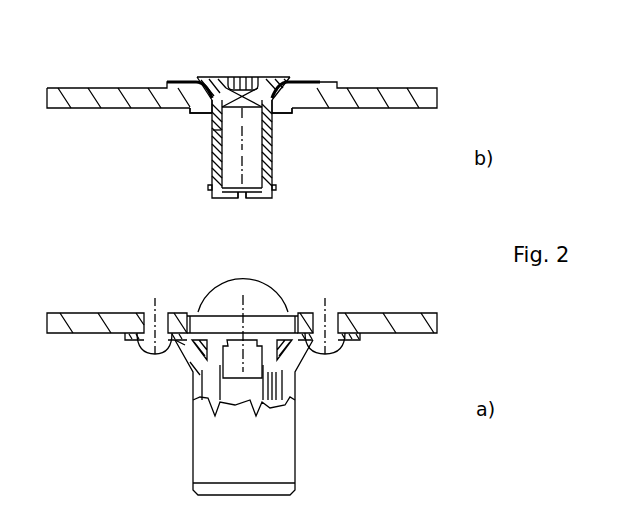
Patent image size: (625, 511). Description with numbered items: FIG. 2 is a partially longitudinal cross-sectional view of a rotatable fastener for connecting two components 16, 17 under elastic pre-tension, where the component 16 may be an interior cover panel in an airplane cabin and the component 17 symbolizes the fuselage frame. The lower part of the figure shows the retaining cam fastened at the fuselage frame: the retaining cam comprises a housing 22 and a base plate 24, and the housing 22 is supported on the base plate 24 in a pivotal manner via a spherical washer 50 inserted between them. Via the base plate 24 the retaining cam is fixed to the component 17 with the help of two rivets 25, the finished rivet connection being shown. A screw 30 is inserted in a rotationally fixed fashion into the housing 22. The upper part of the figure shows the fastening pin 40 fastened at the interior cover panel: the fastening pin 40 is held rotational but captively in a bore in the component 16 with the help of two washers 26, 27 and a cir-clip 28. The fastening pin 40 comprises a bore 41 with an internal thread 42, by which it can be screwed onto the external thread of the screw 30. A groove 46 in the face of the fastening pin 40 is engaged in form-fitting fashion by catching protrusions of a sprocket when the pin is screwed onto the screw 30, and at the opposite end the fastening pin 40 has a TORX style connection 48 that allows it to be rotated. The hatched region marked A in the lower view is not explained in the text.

The component 16 is at (437, 92).
The component 17 is at (424, 322).
The housing 22 is at (267, 457).
The base plate 24 is at (136, 340).
The rivets 25 is at (155, 320).
The washer 26 is at (318, 81).
The washer 27 is at (292, 111).
The cir-clip 28 is at (276, 188).
The screw 30 is at (243, 385).
The fastening pin 40 is at (271, 77).
The bore 41 is at (238, 158).
The internal thread 42 is at (217, 139).
The groove 46 is at (245, 203).
The TORX style connection 48 is at (238, 77).
The spherical washer 50 is at (192, 360).
The section hatched region A is at (282, 361).